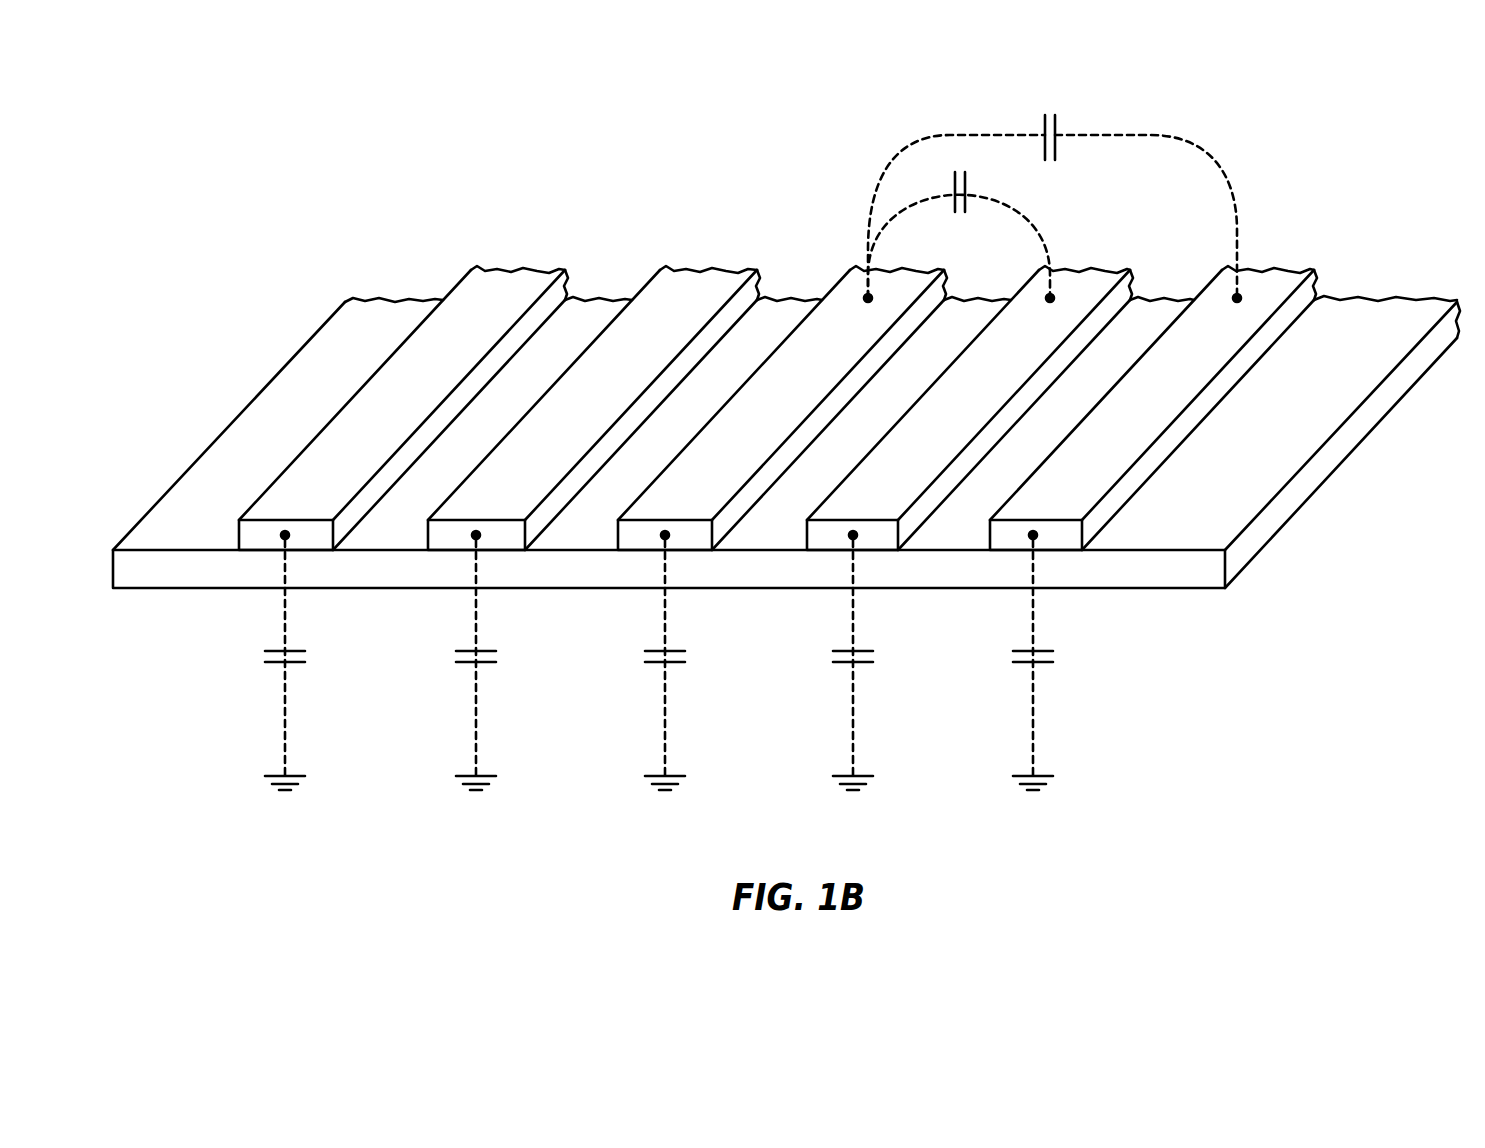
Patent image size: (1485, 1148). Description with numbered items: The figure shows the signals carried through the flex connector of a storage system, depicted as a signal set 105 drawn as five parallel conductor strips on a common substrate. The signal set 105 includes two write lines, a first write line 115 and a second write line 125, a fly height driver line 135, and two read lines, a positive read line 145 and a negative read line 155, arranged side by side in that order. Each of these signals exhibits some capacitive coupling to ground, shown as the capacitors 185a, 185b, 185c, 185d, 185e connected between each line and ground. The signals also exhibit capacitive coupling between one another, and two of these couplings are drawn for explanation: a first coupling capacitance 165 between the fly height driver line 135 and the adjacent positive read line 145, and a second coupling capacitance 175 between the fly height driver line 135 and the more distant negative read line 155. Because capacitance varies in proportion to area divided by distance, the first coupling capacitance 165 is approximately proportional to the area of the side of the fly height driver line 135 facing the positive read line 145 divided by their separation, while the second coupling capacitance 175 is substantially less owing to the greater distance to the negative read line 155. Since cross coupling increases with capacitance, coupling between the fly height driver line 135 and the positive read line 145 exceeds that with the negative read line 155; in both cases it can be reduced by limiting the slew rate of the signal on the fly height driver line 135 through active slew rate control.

The signal set 105 is at (270, 268).
The write line HWX 115 is at (326, 513).
The write line HWY 125 is at (517, 513).
The fly height driver line 135 is at (705, 513).
The read line HRP 145 is at (892, 513).
The read line HRN 155 is at (1074, 513).
The capacitive coupling Cx 165 is at (967, 185).
The capacitive coupling Cy 175 is at (1057, 128).
The capacitor Cz 185a is at (295, 663).
The capacitor Cz 185b is at (486, 663).
The capacitor Cz 185c is at (675, 663).
The capacitor Cz 185d is at (863, 663).
The capacitor Cz 185e is at (1043, 663).